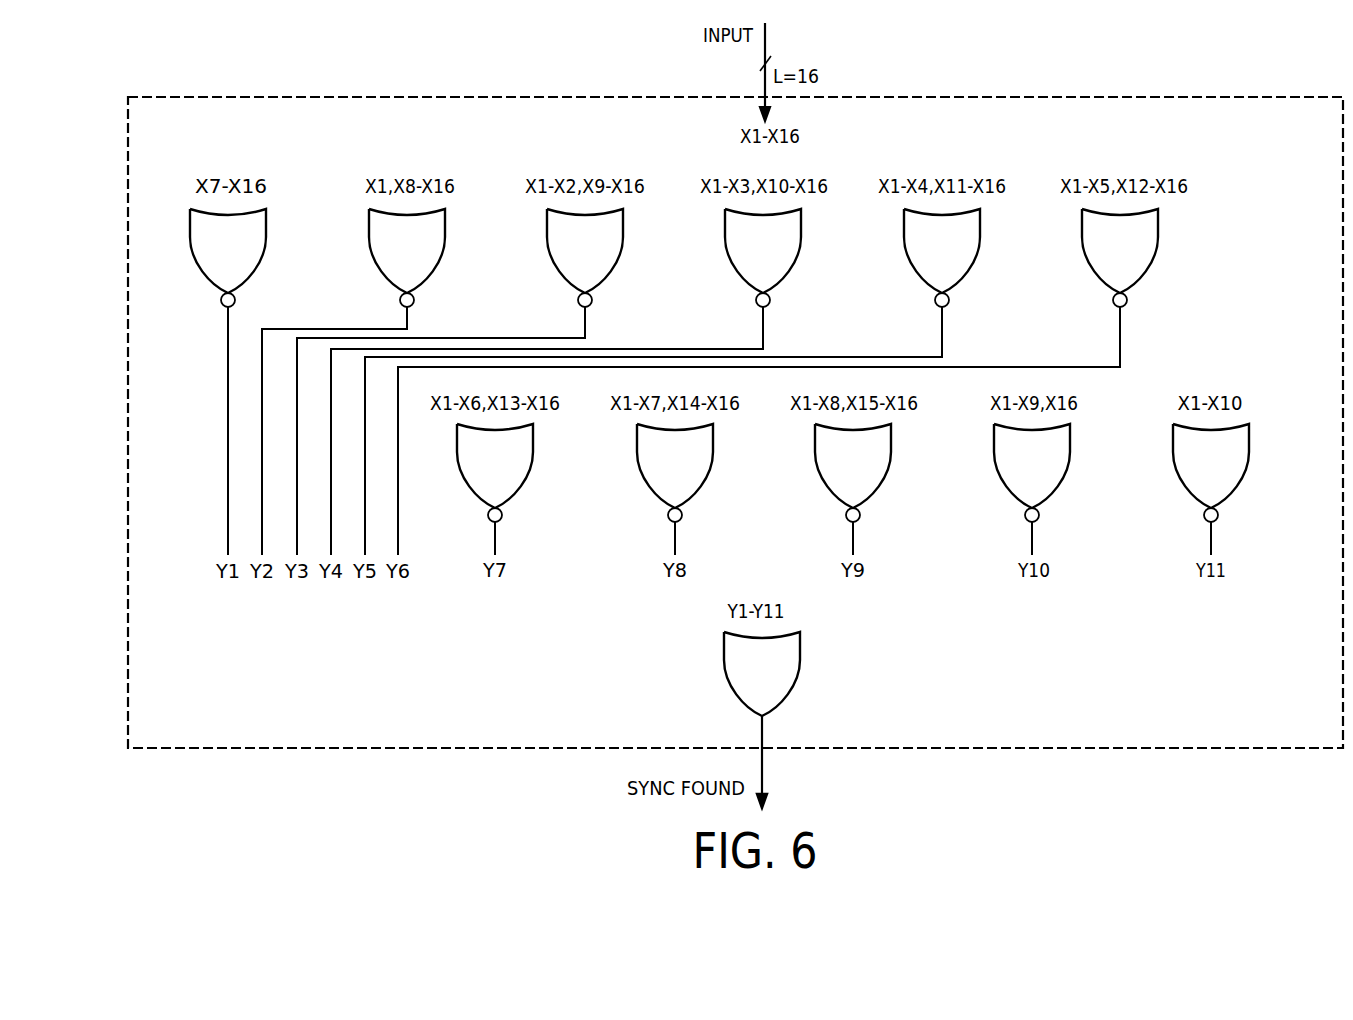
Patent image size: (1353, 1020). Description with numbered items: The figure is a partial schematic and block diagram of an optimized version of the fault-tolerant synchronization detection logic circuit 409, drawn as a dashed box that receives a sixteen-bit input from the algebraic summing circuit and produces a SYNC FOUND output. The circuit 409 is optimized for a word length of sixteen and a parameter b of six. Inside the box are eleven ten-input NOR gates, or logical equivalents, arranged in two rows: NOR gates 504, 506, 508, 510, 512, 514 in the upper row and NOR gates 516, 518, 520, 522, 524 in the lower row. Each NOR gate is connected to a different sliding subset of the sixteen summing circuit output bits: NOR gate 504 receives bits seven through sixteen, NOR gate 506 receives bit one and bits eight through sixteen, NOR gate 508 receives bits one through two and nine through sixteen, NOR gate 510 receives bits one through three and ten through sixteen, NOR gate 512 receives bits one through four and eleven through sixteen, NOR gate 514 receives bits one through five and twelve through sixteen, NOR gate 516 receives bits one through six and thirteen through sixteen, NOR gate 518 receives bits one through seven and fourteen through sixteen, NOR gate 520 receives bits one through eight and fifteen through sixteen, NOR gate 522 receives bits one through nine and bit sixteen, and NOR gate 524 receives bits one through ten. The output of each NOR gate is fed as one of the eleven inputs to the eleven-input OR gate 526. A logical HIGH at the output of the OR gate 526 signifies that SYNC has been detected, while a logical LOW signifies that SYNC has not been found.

The fault-tolerant synchronization detection logic circuit 409 is at (1237, 75).
The NOR gate 504 is at (252, 274).
The NOR gate 506 is at (431, 274).
The NOR gate 508 is at (609, 274).
The NOR gate 510 is at (787, 274).
The NOR gate 512 is at (966, 274).
The NOR gate 514 is at (1144, 274).
The NOR gate 516 is at (519, 489).
The NOR gate 518 is at (699, 489).
The NOR gate 520 is at (877, 489).
The NOR gate 522 is at (1056, 489).
The NOR gate 524 is at (1235, 489).
The OR gate 526 is at (786, 695).